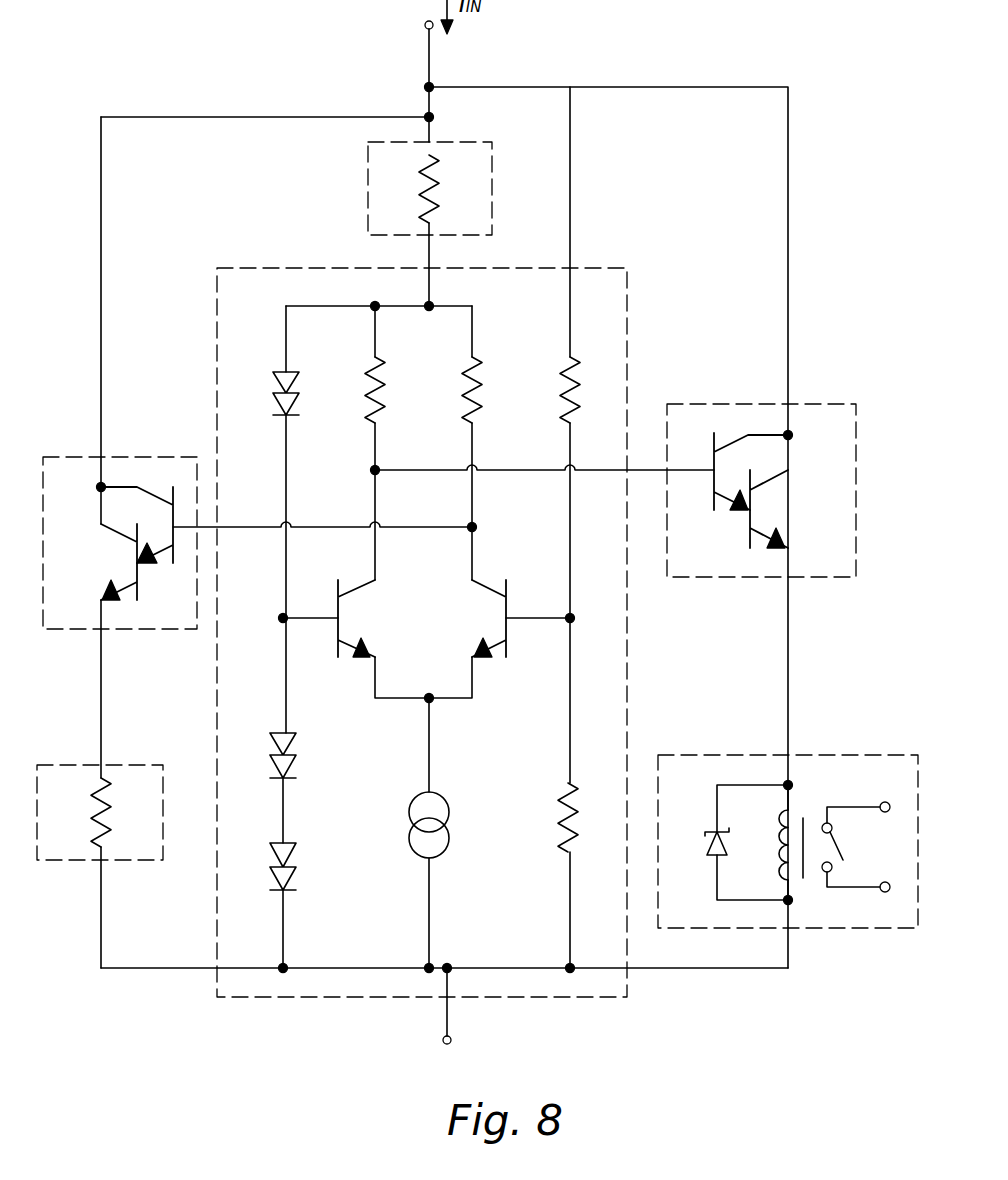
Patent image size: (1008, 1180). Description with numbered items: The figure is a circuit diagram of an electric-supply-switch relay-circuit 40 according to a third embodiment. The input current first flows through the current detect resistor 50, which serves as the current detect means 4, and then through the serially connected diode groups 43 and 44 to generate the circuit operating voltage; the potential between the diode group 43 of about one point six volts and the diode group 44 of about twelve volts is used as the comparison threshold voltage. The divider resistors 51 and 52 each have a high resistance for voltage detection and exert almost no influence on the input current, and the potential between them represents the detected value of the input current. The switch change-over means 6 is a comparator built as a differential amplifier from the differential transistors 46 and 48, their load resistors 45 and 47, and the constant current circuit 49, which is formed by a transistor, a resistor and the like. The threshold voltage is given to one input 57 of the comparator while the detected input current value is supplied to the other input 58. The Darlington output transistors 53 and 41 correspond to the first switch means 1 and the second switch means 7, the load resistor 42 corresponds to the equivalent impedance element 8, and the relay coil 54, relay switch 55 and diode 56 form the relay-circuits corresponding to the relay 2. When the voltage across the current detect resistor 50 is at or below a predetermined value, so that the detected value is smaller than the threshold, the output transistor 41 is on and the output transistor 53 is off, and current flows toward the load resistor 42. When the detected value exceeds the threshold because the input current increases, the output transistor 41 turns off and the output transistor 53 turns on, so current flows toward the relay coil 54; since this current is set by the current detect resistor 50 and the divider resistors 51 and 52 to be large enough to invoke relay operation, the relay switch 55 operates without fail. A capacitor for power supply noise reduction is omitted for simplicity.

The electric-supply-switch relay-circuit 40 is at (672, 62).
The first switch means 1 is at (836, 406).
The relay 2 is at (890, 755).
The current detect means 4 is at (368, 193).
The switch change-over means 6 is at (632, 282).
The second switch means 7 is at (75, 457).
The equivalent impedance element 8 is at (76, 765).
The output transistor 41 is at (136, 568).
The load resistor 42 is at (102, 817).
The diode group 43 is at (292, 403).
The diode group 44 is at (292, 765).
The load resistor 45 is at (380, 373).
The differential transistor 46 is at (340, 626).
The load resistor 47 is at (478, 373).
The differential transistor 48 is at (503, 622).
The constant current circuit 49 is at (449, 815).
The current detect resistor 50 is at (441, 182).
The divider resistor 51 is at (578, 370).
The divider resistor 52 is at (558, 815).
The output transistor 53 is at (752, 518).
The relay coil 54 is at (790, 810).
The relay switch 55 is at (843, 858).
The relay-circuit diode 56 is at (703, 846).
The one input of the comparator 57 is at (322, 618).
The other input of the comparator 58 is at (545, 617).